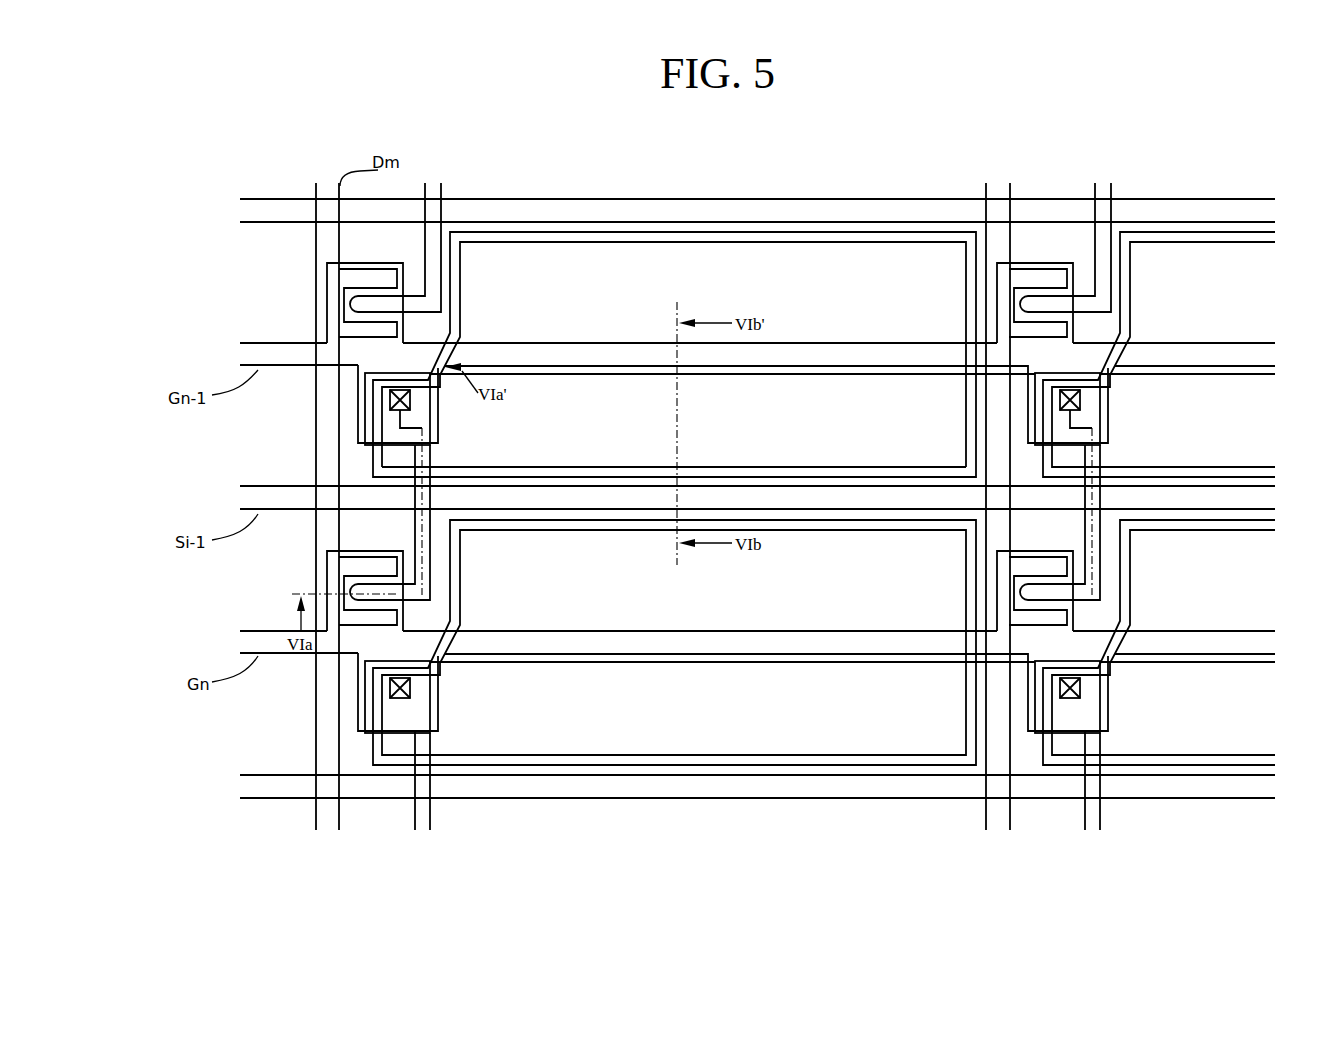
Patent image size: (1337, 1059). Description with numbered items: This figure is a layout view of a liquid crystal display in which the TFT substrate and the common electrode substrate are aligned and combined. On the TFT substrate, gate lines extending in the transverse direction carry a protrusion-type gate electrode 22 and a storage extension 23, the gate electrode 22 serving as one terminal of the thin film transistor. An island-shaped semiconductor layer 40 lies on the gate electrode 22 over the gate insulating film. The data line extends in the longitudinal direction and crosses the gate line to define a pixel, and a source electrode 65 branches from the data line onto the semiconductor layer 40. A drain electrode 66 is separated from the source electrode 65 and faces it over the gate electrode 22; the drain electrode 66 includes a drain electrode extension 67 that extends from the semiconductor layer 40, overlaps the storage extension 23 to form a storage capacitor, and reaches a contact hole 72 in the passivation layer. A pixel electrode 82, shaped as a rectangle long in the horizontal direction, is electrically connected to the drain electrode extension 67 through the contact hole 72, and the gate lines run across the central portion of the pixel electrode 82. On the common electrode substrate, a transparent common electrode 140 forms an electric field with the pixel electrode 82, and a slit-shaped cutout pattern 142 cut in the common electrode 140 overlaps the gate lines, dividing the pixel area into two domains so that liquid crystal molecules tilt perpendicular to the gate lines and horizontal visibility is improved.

The gate electrode 22 is at (330, 566).
The storage extension 23 is at (356, 408).
The semiconductor layer 40 is at (335, 585).
The source electrode 65 is at (380, 568).
The drain electrode 66 is at (358, 604).
The drain electrode extension 67 is at (378, 450).
The contact hole 72 is at (410, 400).
The pixel electrode 82 is at (803, 232).
The common electrode 140 is at (718, 242).
The cutout pattern 142 is at (617, 333).